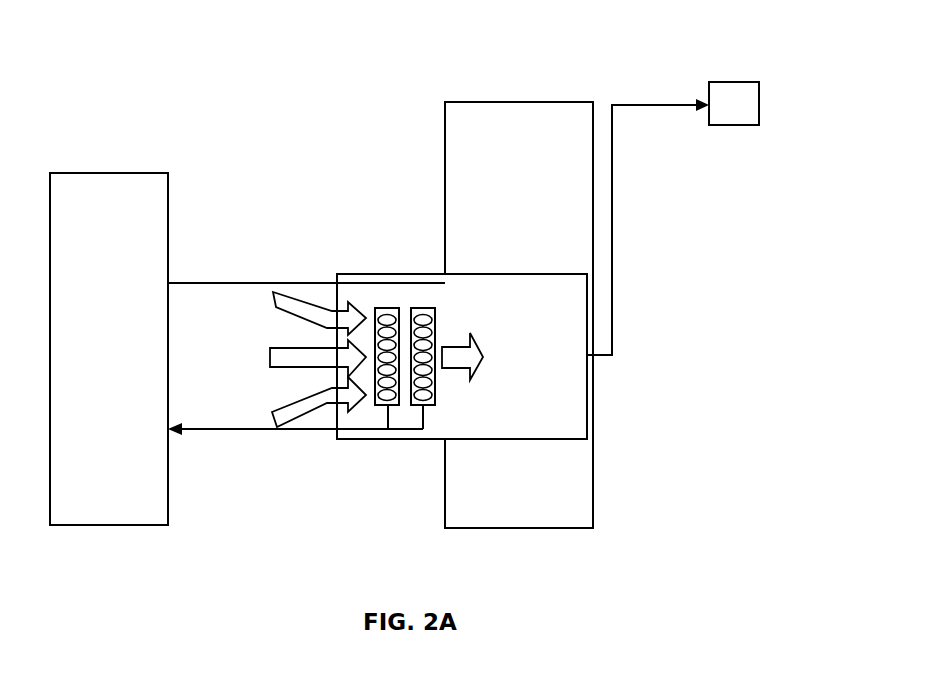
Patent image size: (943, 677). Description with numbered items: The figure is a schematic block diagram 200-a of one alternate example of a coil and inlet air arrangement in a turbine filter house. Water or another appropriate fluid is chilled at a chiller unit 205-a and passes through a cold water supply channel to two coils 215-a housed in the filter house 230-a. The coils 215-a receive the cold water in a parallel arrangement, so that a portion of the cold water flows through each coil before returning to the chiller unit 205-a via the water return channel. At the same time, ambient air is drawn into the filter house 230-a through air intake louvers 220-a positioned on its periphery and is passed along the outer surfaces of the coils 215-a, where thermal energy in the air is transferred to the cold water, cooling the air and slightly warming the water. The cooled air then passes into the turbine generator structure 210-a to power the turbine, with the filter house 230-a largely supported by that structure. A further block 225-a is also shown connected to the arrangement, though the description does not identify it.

The schematic block diagram 200-a is at (203, 86).
The chiller unit 205-a is at (140, 362).
The turbine generator structure 210-a is at (532, 528).
The coils 215-a is at (423, 298).
The air intake louvers 220-a is at (303, 503).
The controller 225-a is at (738, 82).
The filter house 230-a is at (422, 439).